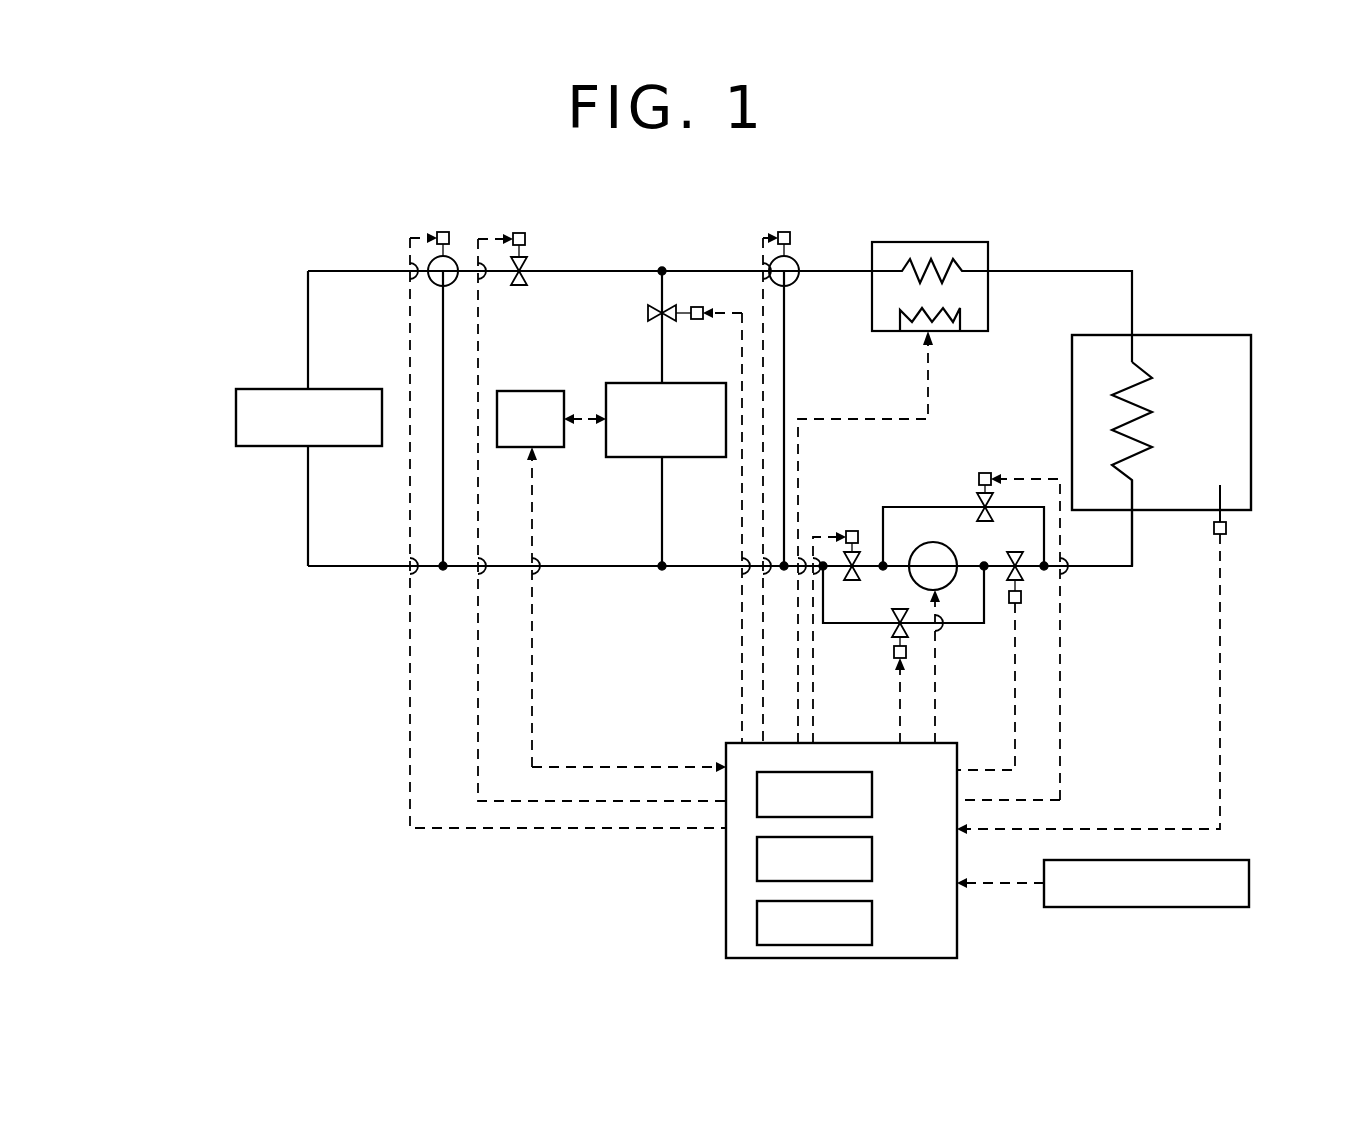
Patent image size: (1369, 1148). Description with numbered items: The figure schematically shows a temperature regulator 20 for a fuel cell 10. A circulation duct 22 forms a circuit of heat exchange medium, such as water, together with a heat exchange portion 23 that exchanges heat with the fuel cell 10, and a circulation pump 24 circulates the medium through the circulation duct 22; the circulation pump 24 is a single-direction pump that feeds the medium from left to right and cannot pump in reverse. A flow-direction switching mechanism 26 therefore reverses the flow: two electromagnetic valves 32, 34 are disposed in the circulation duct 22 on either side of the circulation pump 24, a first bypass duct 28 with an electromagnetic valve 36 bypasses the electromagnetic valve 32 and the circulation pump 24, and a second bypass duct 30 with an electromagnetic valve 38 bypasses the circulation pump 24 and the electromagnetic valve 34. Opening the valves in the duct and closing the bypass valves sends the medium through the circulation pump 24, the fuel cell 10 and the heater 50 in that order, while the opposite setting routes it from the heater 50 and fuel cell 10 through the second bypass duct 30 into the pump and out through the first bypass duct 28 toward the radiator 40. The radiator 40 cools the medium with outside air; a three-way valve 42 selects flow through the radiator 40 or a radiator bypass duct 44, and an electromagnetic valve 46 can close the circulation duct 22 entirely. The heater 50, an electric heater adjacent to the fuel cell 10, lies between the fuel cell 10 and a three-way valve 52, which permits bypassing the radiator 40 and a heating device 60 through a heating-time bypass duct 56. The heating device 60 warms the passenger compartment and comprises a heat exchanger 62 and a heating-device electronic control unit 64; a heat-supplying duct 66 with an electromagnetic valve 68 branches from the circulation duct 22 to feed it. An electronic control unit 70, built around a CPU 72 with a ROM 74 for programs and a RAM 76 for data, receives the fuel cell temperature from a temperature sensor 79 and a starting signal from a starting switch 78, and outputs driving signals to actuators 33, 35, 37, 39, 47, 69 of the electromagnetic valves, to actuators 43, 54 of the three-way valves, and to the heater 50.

The fuel cell 10 is at (1211, 335).
The temperature regulator 20 is at (1087, 190).
The circulation duct 22 is at (1112, 271).
The heat exchange portion 23 is at (1128, 410).
The circulation pump 24 is at (940, 543).
The flow-direction switching mechanism 26 is at (1078, 606).
The first bypass duct 28 is at (972, 623).
The second bypass duct 30 is at (912, 507).
The electromagnetic valve 32 is at (853, 580).
The actuator 33 is at (849, 531).
The electromagnetic valve 34 is at (1088, 524).
The actuator 35 is at (1022, 603).
The electromagnetic valve 36 is at (892, 631).
The actuator 37 is at (894, 659).
The electromagnetic valve 38 is at (978, 500).
The actuator 39 is at (992, 476).
The radiator 40 is at (236, 410).
The three-way valve 42 is at (455, 262).
The actuator 43 is at (443, 232).
The radiator bypass duct 44 is at (443, 327).
The electromagnetic valve 46 is at (529, 268).
The actuator 47 is at (525, 234).
The heater 50 is at (948, 242).
The three-way valve 52 is at (798, 262).
The actuator 54 is at (781, 232).
The heating-time bypass duct 56 is at (784, 364).
The heating device 60 is at (617, 484).
The heat exchanger 62 is at (640, 383).
The heating-device electronic control unit 64 is at (537, 391).
The heat-supplying duct 66 is at (660, 271).
The electromagnetic valve 68 is at (648, 313).
The actuator 69 is at (700, 307).
The electronic control unit 70 is at (726, 914).
The CPU 72 is at (872, 792).
The ROM 74 is at (872, 856).
The RAM 76 is at (872, 916).
The starting switch 78 is at (1249, 886).
The temperature sensor 79 is at (1226, 529).